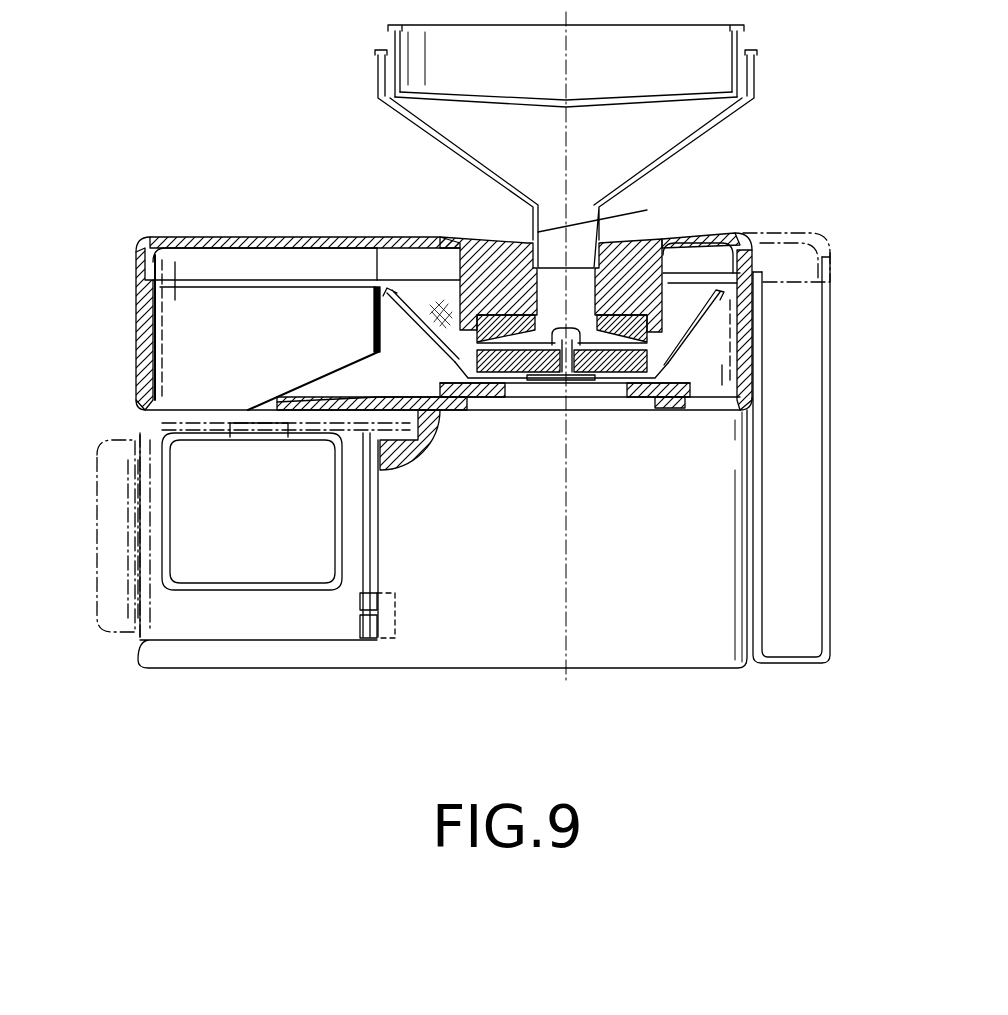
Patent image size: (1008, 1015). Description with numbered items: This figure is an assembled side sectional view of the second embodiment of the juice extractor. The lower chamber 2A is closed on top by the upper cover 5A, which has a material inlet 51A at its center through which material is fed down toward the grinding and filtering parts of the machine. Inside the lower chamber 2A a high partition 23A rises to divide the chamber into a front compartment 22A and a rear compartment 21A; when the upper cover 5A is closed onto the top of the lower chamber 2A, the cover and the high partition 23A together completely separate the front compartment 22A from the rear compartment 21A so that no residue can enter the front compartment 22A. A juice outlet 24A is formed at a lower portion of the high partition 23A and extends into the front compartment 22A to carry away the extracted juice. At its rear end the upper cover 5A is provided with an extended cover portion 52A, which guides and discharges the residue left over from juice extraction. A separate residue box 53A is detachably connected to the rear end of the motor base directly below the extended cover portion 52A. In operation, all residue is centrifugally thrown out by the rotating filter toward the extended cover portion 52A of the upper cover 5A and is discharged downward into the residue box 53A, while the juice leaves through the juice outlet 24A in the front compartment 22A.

The lower chamber 2A is at (140, 320).
The upper cover 5A is at (407, 238).
The rear compartment 21A is at (707, 343).
The front compartment 22A is at (188, 377).
The high partition 23A is at (375, 273).
The juice outlet 24A is at (313, 390).
The material inlet 51A is at (587, 295).
The extended cover portion 52A is at (808, 233).
The residue box 53A is at (832, 525).